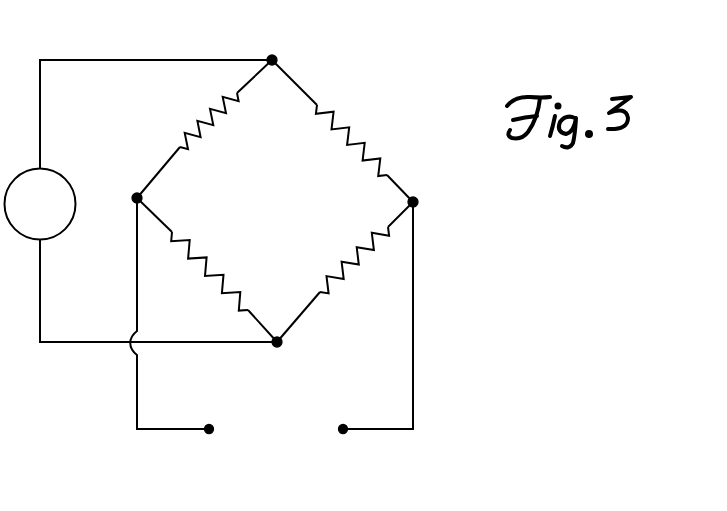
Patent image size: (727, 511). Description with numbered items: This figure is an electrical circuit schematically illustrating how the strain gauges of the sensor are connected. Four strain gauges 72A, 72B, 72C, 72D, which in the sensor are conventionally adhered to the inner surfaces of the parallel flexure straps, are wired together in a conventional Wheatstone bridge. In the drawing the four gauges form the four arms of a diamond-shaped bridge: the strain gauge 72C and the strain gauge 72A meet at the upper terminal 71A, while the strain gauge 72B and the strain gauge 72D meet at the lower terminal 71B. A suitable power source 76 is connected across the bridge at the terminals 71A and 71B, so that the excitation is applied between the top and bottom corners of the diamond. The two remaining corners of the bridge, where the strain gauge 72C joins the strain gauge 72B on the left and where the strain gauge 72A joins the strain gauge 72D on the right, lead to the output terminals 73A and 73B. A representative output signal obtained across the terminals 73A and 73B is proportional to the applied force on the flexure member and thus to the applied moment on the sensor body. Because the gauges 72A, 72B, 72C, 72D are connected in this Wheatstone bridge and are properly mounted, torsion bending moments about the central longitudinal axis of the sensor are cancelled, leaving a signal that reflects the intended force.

The power source 76 is at (52, 218).
The terminal 71A is at (278, 57).
The terminal 71B is at (279, 348).
The strain gauge 72A is at (340, 120).
The strain gauge 72B is at (204, 257).
The strain gauge 72C is at (212, 107).
The strain gauge 72D is at (350, 268).
The terminal 73A is at (209, 426).
The terminal 73B is at (343, 426).